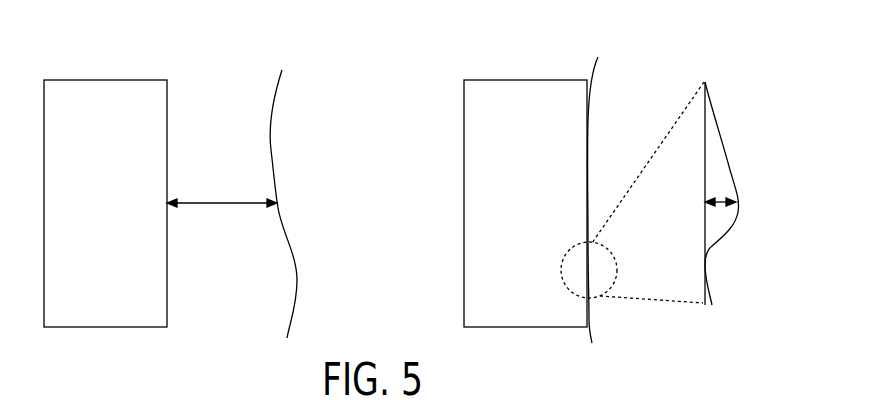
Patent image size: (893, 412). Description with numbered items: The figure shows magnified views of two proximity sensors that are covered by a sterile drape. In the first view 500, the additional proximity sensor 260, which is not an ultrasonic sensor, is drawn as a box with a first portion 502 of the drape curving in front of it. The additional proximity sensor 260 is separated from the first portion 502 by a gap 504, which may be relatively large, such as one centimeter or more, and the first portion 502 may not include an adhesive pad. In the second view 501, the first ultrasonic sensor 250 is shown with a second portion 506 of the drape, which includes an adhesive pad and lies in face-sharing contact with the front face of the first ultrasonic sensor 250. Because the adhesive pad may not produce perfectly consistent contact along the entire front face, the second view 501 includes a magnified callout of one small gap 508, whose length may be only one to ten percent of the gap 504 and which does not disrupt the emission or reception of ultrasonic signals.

The first view 500 is at (225, 46).
The second view 501 is at (631, 38).
The first portion 502 is at (272, 118).
The gap 504 is at (191, 202).
The additional proximity sensor 260 is at (125, 210).
The first ultrasonic sensor 250 is at (547, 210).
The second portion 506 is at (596, 70).
The gap 508 is at (724, 199).